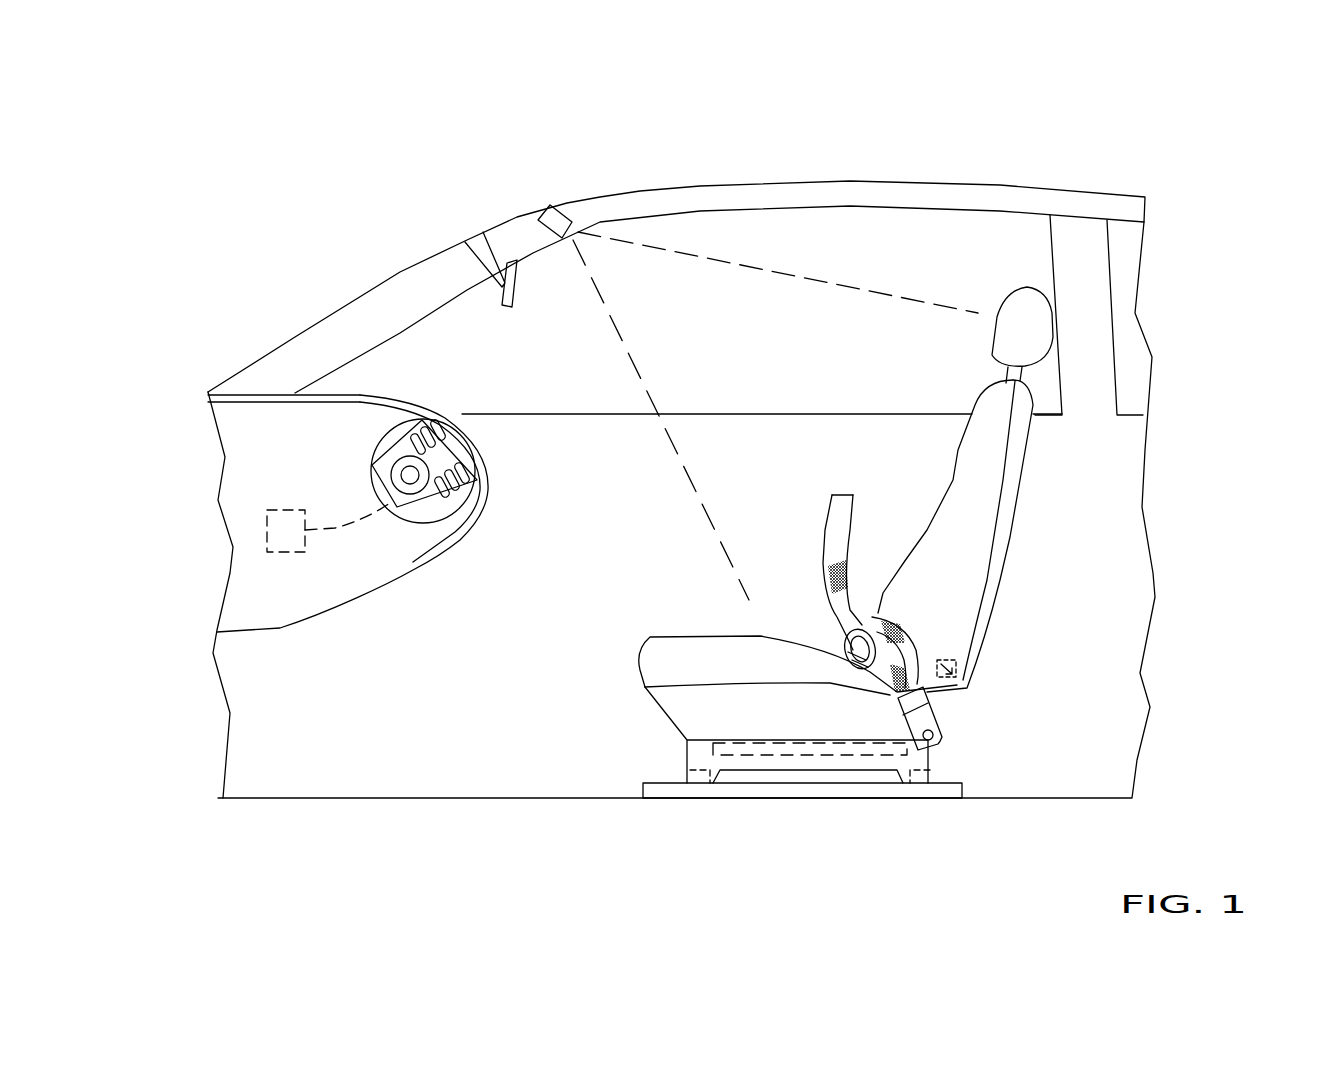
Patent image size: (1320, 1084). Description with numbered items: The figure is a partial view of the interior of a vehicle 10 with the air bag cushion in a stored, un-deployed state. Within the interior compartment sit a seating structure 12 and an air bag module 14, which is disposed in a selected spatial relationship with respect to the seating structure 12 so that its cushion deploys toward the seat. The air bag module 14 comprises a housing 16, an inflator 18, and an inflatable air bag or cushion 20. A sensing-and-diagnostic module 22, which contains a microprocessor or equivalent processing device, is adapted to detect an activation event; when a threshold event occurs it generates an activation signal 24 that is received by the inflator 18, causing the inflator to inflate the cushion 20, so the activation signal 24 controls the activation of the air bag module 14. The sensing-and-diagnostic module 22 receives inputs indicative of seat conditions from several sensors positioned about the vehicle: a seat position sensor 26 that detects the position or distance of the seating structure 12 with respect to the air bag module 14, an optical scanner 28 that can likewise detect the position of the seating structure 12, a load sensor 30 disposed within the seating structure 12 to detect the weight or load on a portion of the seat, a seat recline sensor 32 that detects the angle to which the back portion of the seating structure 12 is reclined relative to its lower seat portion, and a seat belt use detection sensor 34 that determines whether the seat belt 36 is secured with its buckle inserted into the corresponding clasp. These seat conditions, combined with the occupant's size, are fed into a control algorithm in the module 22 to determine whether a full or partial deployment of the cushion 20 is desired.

The vehicle 10 is at (1173, 287).
The seating structure 12 is at (1010, 537).
The air bag module 14 is at (472, 497).
The housing 16 is at (372, 465).
The inflator 18 is at (413, 493).
The inflatable cushion 20 is at (425, 422).
The sensing-and-diagnostic module 22 is at (278, 553).
The activation signal 24 is at (347, 525).
The seat position sensor 26 is at (695, 773).
The optical scanner 28 is at (548, 205).
The load sensor 30 is at (925, 780).
The seat recline sensor 32 is at (957, 682).
The seat belt use detection sensor 34 is at (907, 723).
The seat belt 36 is at (838, 610).